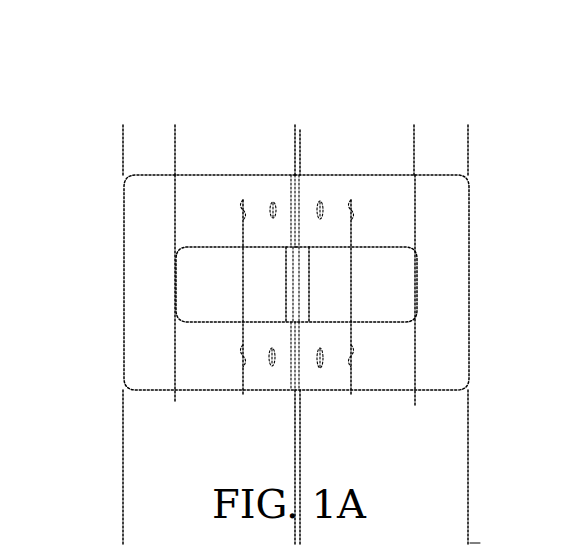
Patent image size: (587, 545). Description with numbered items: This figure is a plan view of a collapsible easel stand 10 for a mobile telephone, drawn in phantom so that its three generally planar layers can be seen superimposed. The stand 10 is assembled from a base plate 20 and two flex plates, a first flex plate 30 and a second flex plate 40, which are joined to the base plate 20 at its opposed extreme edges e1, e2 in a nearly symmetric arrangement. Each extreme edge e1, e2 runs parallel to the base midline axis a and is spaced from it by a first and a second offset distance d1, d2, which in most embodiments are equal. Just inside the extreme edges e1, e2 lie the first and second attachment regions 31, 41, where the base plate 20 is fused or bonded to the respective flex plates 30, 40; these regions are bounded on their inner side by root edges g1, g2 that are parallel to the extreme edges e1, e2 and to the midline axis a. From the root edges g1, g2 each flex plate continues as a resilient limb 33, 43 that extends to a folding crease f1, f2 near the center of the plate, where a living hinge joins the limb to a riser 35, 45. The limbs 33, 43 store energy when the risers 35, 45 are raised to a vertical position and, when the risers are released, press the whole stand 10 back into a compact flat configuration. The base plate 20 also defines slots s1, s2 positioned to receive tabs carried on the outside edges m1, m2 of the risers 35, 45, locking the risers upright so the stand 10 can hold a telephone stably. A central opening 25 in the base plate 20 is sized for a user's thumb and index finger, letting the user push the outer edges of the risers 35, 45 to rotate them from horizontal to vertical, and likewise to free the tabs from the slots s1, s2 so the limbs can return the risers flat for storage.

The stand 10 is at (303, 209).
The base plate 20 is at (231, 288).
The opening 25 is at (418, 313).
The first flex plate 30 is at (120, 239).
The first attachment region 31 is at (163, 196).
The first limb 33 is at (251, 196).
The first riser 35 is at (286, 196).
The second flex plate 40 is at (474, 351).
The second attachment region 41 is at (453, 196).
The second limb 43 is at (360, 196).
The second riser 45 is at (323, 196).
The base midline axis a is at (295, 125).
The first offset distance d1 is at (119, 424).
The second offset distance d2 is at (490, 143).
The first extreme edge e1 is at (122, 125).
The second extreme edge e2 is at (468, 125).
The first folding crease f1 is at (297, 448).
The second folding crease f2 is at (308, 425).
The first root edge g1 is at (175, 125).
The second root edge g2 is at (414, 125).
The first outside edge m1 is at (243, 394).
The second outside edge m2 is at (351, 392).
The first slot s1 is at (270, 218).
The second slot s2 is at (320, 219).